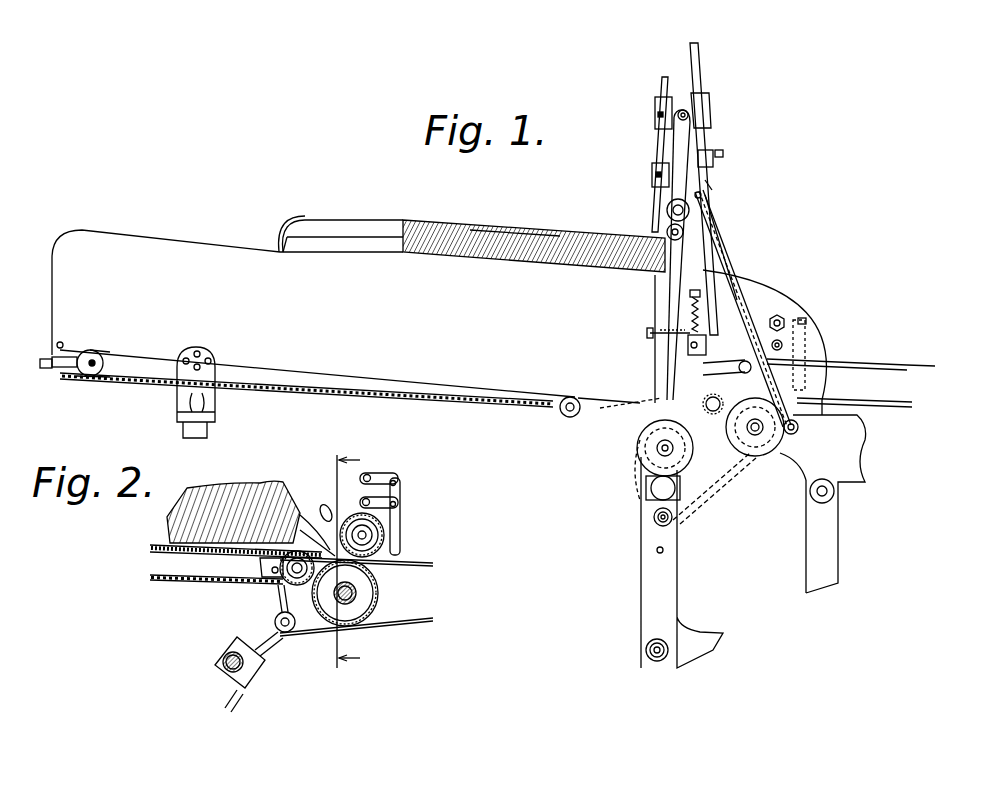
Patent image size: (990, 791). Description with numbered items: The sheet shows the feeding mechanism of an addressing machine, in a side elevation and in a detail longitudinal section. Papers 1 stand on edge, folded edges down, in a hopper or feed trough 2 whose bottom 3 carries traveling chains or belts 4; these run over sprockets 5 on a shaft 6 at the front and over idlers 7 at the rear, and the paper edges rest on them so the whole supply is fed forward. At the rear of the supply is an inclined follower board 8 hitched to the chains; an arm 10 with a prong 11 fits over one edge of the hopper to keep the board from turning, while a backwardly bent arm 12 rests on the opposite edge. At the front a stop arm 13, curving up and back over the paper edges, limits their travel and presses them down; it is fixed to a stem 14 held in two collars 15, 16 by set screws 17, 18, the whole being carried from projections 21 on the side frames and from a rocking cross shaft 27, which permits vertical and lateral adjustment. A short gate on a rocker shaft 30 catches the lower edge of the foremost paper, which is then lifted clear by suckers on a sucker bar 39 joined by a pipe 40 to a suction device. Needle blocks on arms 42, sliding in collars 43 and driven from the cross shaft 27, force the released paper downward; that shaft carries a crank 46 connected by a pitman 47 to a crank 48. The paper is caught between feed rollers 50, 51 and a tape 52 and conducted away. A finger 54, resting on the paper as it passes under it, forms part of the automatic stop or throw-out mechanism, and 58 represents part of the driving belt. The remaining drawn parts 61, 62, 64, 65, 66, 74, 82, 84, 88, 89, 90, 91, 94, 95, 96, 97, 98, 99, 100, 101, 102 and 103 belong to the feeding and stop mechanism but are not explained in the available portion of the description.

In FIG. 1, the papers 1 is at (85, 372).
In FIG. 2, the papers 1 is at (183, 488).
In FIG. 1, the hopper 2 is at (147, 248).
In FIG. 2, the bottom 3 is at (284, 483).
In FIG. 1, the traveling chains 4 is at (478, 390).
In FIG. 2, the traveling chains 4 is at (216, 579).
In FIG. 2, the sprockets 5 is at (260, 570).
In FIG. 1, the shaft 6 is at (708, 433).
In FIG. 2, the shaft 6 is at (280, 588).
In FIG. 1, the idlers 7 is at (480, 236).
In FIG. 1, the follower board 8 is at (405, 224).
In FIG. 1, the arm 10 is at (336, 223).
In FIG. 1, the prong 11 is at (284, 253).
In FIG. 2, the prong 11 is at (350, 692).
In FIG. 1, the arm 12 is at (701, 74).
In FIG. 1, the stop arm 13 is at (709, 112).
In FIG. 1, the stem 14 is at (666, 80).
In FIG. 1, the collar 15 is at (657, 102).
In FIG. 1, the collar 16 is at (655, 183).
In FIG. 1, the set screw 17 is at (658, 115).
In FIG. 1, the set screw 18 is at (657, 173).
In FIG. 1, the projections 21 is at (680, 140).
In FIG. 1, the cross shaft 27 is at (668, 205).
In FIG. 2, the rocker shaft 30 is at (432, 565).
In FIG. 2, the sucker bar 39 is at (324, 505).
In FIG. 1, the pipe 40 is at (637, 405).
In FIG. 1, the arms 42 is at (707, 183).
In FIG. 2, the collars 43 is at (352, 598).
In FIG. 1, the crank 46 is at (701, 193).
In FIG. 1, the pitman 47 is at (742, 262).
In FIG. 1, the crank 48 is at (794, 431).
In FIG. 2, the feed roller 50 is at (380, 593).
In FIG. 2, the feed roller 51 is at (380, 537).
In FIG. 1, the tape 52 is at (910, 366).
In FIG. 2, the tape 52 is at (420, 513).
In FIG. 2, the finger 54 is at (390, 525).
In FIG. 2, the driving belt 58 is at (253, 515).
In FIG. 2, the bracket pin 61 is at (396, 480).
In FIG. 2, the bracket pin 62 is at (385, 503).
In FIG. 2, the bracket 64 is at (370, 473).
In FIG. 1, the rod 65 is at (815, 400).
In FIG. 1, the disc 66 is at (770, 455).
In FIG. 1, the plate 74 is at (753, 297).
In FIG. 2, the link 82 is at (272, 600).
In FIG. 2, the turnbuckle block 84 is at (273, 648).
In FIG. 1, the bracket 88 is at (806, 356).
In FIG. 1, the rod 89 is at (862, 363).
In FIG. 1, the stop 90 is at (803, 324).
In FIG. 1, the nut 91 is at (781, 318).
In FIG. 1, the cap 94 is at (684, 297).
In FIG. 1, the screw 95 is at (648, 333).
In FIG. 1, the rod 96 is at (715, 280).
In FIG. 1, the pulley 97 is at (690, 212).
In FIG. 1, the bolt 98 is at (705, 369).
In FIG. 1, the block 99 is at (690, 345).
In FIG. 1, the dashed link 100 is at (660, 403).
In FIG. 1, the arc 101 is at (670, 410).
In FIG. 1, the chain 102 is at (742, 460).
In FIG. 1, the spring 103 is at (690, 312).